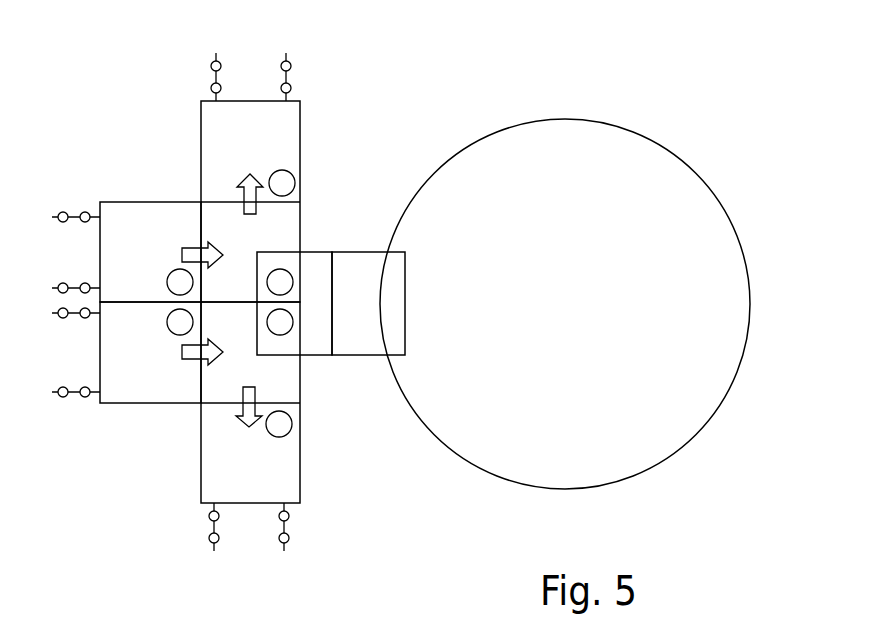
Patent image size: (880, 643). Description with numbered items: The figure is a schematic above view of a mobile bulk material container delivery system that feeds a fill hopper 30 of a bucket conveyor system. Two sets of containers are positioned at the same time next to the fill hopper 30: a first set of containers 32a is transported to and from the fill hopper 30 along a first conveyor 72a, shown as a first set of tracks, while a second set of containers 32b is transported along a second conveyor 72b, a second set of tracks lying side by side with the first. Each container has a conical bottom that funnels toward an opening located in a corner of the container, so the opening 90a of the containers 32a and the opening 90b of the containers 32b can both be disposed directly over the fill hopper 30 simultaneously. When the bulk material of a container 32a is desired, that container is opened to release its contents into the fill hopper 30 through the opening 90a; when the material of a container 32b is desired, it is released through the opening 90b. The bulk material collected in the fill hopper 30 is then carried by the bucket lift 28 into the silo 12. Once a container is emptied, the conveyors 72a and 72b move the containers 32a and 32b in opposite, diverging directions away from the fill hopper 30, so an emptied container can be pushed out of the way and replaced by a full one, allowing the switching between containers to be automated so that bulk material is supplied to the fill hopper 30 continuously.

The silo 12 is at (570, 310).
The bucket lift 28 is at (368, 258).
The fill hopper 30 is at (316, 352).
The first set of containers 32a is at (266, 147).
The second set of containers 32b is at (154, 357).
The first conveyor 72a is at (292, 78).
The second conveyor 72b is at (73, 397).
The opening 90a is at (288, 174).
The opening 90b is at (176, 334).